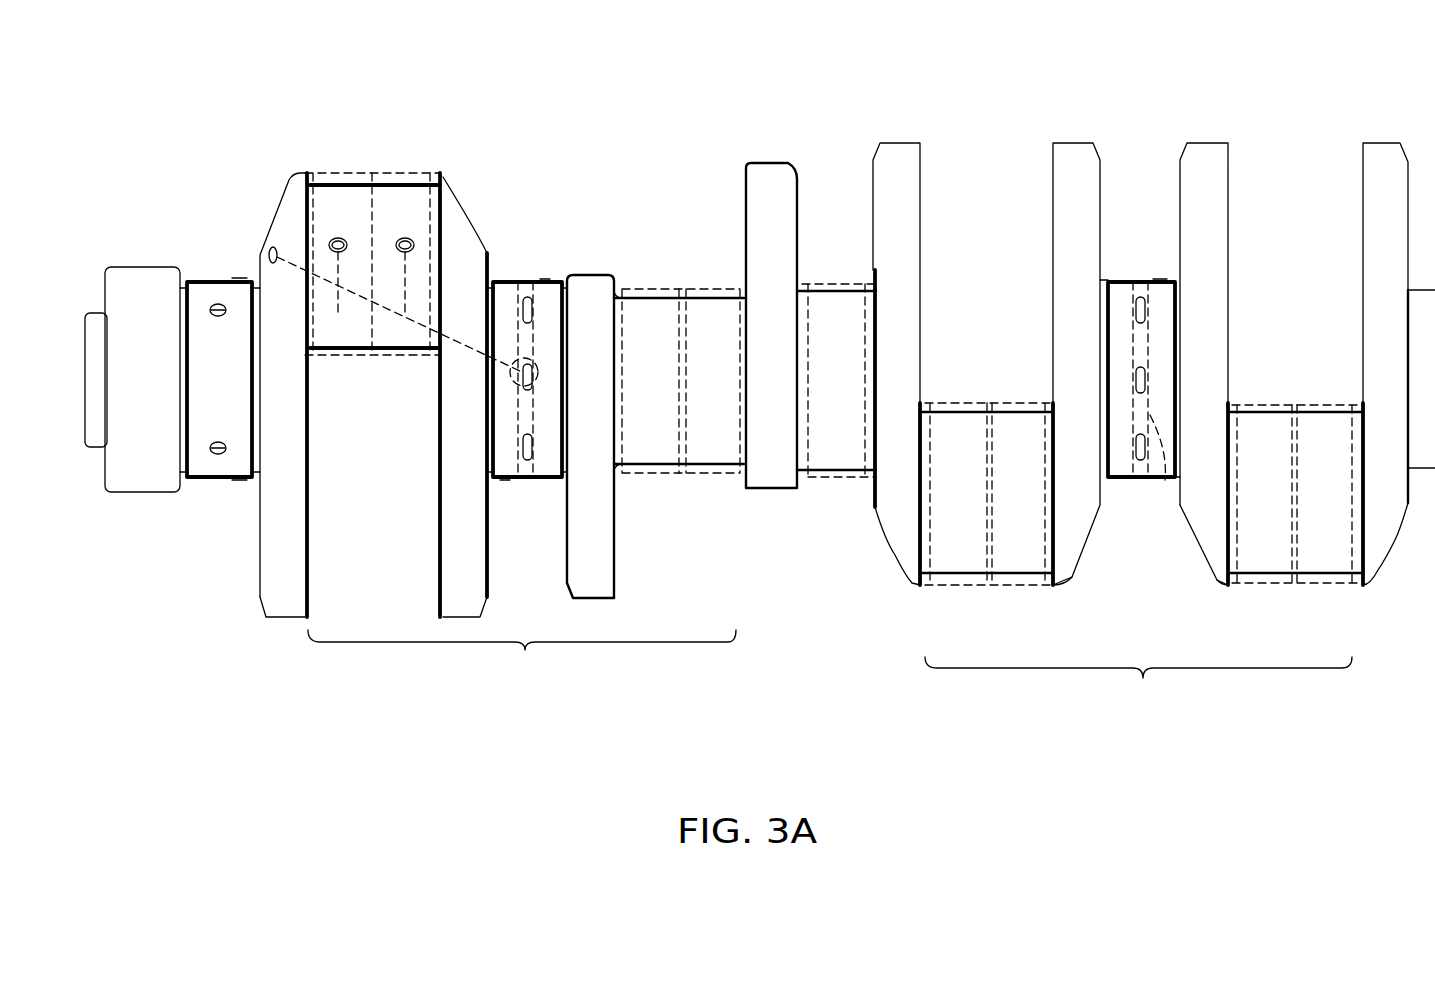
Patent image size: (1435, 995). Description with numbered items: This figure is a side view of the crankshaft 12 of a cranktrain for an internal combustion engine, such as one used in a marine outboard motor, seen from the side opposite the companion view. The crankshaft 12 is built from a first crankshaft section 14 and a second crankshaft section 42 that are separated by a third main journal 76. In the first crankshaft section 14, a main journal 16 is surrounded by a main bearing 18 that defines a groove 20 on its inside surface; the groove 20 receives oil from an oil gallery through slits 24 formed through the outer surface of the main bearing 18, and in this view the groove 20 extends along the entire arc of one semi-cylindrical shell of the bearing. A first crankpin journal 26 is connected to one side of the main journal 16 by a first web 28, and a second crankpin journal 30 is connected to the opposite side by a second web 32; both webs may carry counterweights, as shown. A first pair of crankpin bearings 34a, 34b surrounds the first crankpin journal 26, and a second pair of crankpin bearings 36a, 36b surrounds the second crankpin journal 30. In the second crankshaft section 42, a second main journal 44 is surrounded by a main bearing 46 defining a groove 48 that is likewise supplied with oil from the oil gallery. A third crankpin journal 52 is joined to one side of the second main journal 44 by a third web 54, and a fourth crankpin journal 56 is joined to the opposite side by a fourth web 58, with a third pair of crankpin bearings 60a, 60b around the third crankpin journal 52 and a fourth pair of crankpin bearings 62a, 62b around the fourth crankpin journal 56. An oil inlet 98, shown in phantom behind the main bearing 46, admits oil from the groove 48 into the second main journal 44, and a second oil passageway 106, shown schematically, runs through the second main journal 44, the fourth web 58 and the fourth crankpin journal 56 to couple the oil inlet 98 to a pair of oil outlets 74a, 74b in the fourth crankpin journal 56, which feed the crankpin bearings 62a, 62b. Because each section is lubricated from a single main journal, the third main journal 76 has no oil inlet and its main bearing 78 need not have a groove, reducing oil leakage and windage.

The crankshaft 12 is at (176, 260).
The first crankshaft section 14 is at (1154, 434).
The main journal 16 is at (1178, 280).
The main bearing 18 is at (1120, 280).
The groove 20 is at (1165, 480).
The slits 24 is at (1143, 297).
The first crankpin journal 26 is at (1282, 573).
The first web 28 is at (1218, 583).
The second crankpin journal 30 is at (968, 573).
The second web 32 is at (1070, 557).
The crankpin bearing 34a is at (1308, 405).
The crankpin bearing 34b is at (1247, 405).
The crankpin bearing 36a is at (998, 405).
The crankpin bearing 36b is at (937, 405).
The second crankshaft section 42 is at (498, 434).
The second main journal 44 is at (490, 476).
The main bearing 46 is at (537, 478).
The groove 48 is at (535, 335).
The third crankpin journal 52 is at (688, 298).
The third web 54 is at (598, 272).
The fourth crankpin journal 56 is at (362, 350).
The fourth web 58 is at (470, 222).
The crankpin bearing 60a is at (718, 473).
The crankpin bearing 60b is at (660, 473).
The crankpin bearing 62a is at (430, 173).
The crankpin bearing 62b is at (360, 173).
The oil outlet 74a is at (405, 238).
The oil outlet 74b is at (338, 238).
The third main journal 76 is at (815, 291).
The main bearing 78 is at (845, 480).
The oil inlet 98 is at (519, 356).
The second oil passageway 106 is at (388, 348).